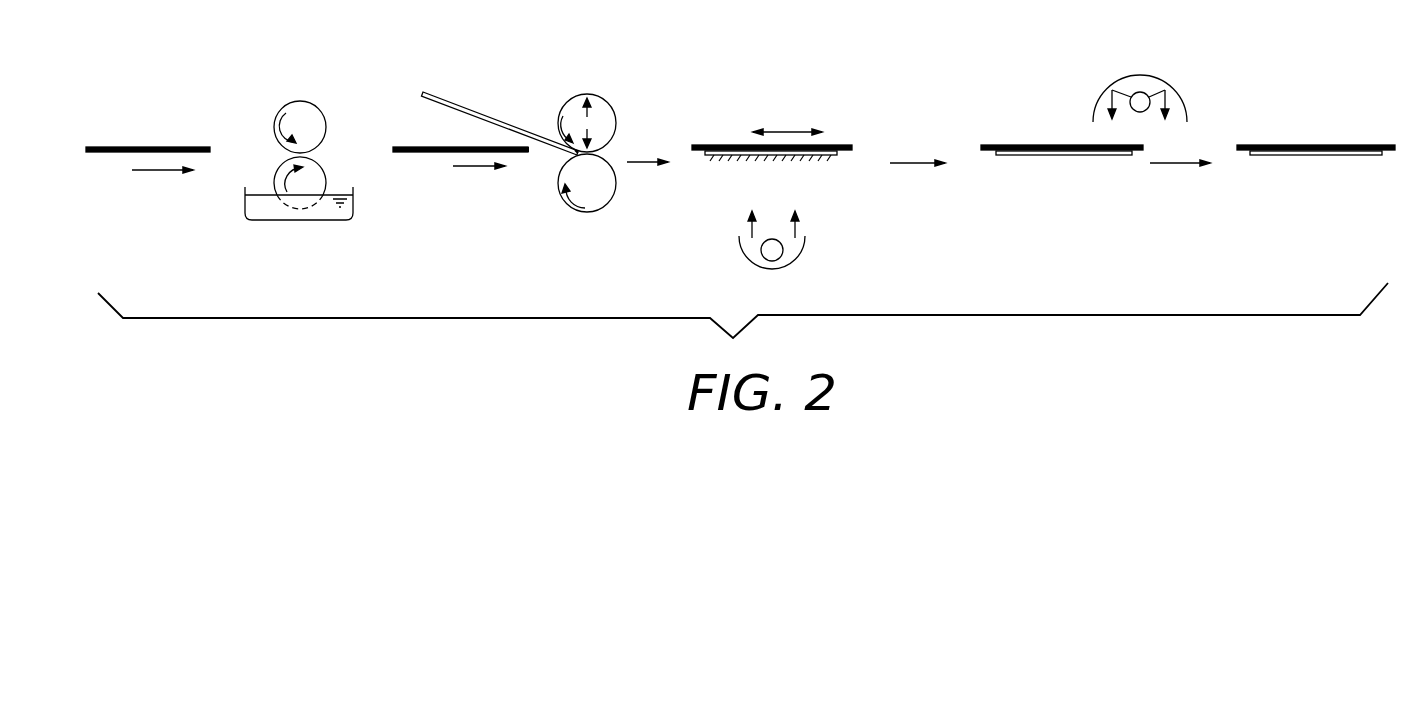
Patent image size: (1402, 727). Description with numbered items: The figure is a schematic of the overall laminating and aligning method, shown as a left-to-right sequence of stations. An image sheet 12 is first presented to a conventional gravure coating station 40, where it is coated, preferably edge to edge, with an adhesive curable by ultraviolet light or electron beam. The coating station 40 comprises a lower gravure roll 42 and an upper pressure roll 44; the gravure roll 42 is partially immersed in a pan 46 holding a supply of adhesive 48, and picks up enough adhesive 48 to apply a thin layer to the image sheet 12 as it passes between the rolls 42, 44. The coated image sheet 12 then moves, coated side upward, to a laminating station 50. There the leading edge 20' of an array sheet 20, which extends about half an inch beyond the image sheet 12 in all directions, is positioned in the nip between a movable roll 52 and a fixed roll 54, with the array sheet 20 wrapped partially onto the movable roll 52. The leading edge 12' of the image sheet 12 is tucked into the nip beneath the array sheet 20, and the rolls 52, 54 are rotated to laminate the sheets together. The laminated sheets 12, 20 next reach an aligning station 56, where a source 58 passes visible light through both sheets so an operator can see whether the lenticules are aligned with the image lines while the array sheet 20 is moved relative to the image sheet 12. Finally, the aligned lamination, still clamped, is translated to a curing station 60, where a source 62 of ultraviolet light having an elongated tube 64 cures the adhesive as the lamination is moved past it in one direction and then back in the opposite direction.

The image sheet 12 is at (734, 150).
The leading edge of image sheet 12' is at (498, 181).
The array sheet 20 is at (909, 104).
The leading edge of array sheet 20' is at (548, 181).
The gravure coating station 40 is at (278, 90).
The gravure roll 42 is at (326, 170).
The pressure roll 44 is at (320, 104).
The pan 46 is at (245, 188).
The adhesive 48 is at (279, 210).
The laminating station 50 is at (578, 76).
The movable roll 52 is at (612, 100).
The fixed roll 54 is at (610, 206).
The aligning station 56 is at (826, 92).
The source 58 is at (800, 250).
The curing station 60 is at (1050, 80).
The source of ultraviolet light 62 is at (1184, 94).
The elongated tube 64 is at (1148, 95).